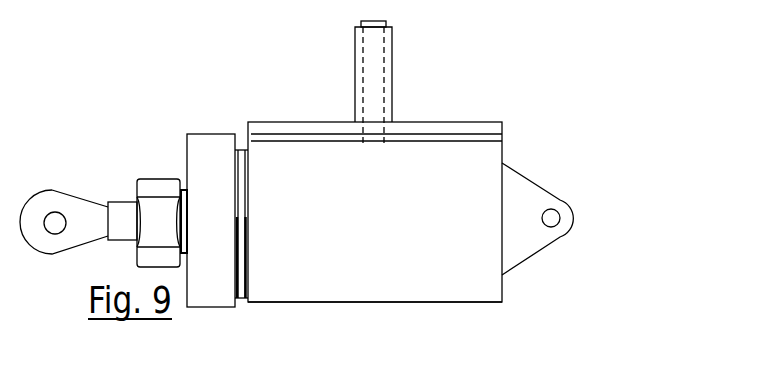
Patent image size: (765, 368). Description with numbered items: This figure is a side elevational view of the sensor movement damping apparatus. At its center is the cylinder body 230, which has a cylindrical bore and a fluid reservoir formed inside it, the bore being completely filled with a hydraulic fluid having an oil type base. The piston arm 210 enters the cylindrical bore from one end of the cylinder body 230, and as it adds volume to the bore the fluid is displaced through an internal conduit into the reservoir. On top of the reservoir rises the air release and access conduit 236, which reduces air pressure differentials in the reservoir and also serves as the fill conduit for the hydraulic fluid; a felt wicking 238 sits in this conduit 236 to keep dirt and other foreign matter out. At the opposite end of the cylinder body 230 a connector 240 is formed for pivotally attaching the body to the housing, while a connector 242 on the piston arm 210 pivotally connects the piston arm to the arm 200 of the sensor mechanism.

The arm 200 is at (454, 113).
The arm 210 is at (121, 202).
The cylinder body 230 is at (366, 302).
The air release and access conduit 236 is at (392, 90).
The felt wicking 238 is at (386, 21).
The connector 240 is at (526, 158).
The connector 242 is at (55, 253).